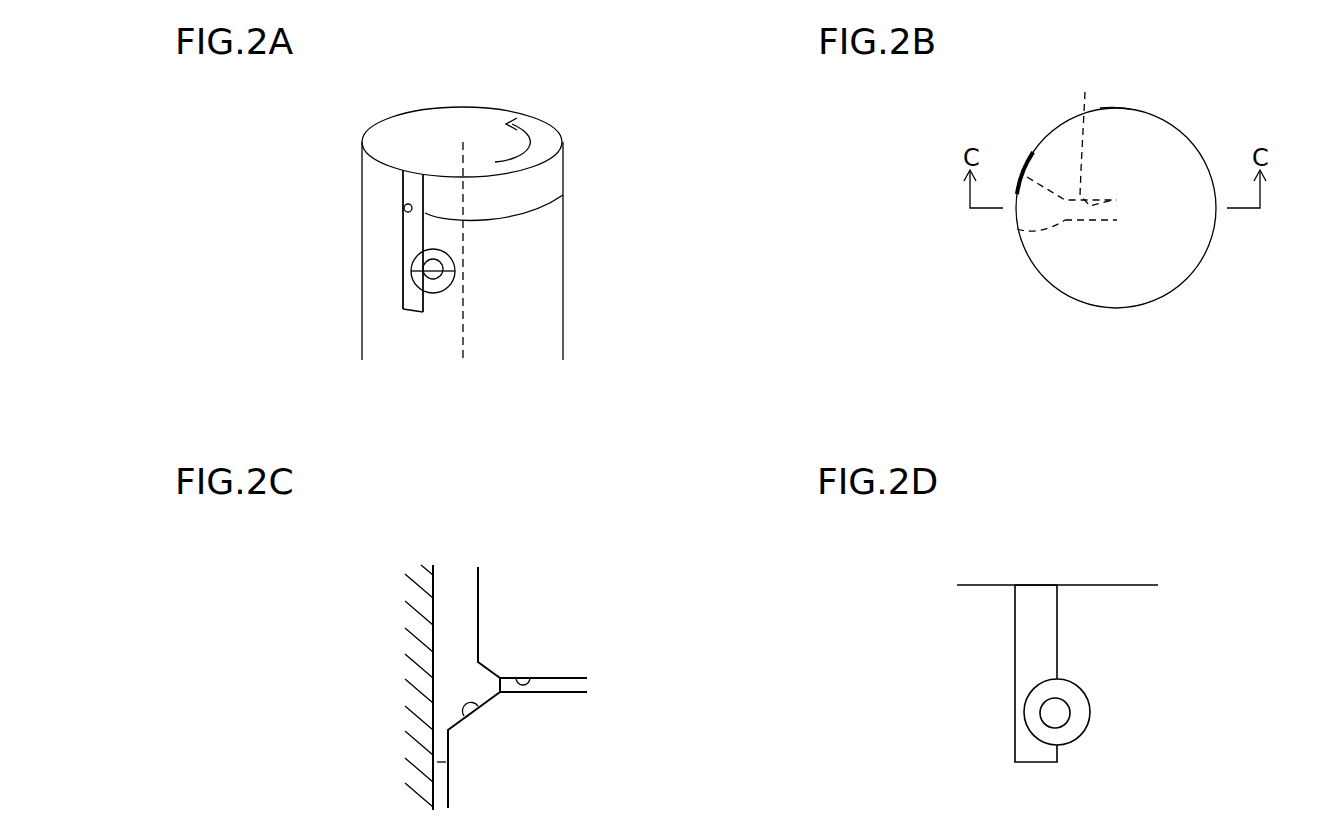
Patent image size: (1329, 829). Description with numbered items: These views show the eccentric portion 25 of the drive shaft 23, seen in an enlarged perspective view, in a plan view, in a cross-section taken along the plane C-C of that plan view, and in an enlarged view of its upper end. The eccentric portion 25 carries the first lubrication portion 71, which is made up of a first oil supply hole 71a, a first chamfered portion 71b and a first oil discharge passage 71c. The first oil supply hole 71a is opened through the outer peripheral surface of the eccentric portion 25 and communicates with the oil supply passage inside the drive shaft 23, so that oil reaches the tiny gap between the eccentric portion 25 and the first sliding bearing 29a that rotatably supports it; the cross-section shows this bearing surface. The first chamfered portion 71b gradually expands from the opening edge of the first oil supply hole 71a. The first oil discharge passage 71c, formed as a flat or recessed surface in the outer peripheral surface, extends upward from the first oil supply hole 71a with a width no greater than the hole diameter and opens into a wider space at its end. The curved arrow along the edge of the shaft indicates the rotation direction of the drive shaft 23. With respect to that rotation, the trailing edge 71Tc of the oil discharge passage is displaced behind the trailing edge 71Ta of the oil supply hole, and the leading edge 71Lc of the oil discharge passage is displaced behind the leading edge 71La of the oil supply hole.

In FIG. 2A, the drive shaft 23 is at (582, 163).
In FIG. 2B, the drive shaft 23 is at (1208, 122).
In FIG. 2A, the eccentric portion 25 is at (563, 245).
In FIG. 2B, the eccentric portion 25 is at (1208, 250).
In FIG. 2C, the eccentric portion 25 is at (430, 757).
In FIG. 2C, the first sliding bearing 29a is at (418, 776).
In FIG. 2A, the first lubrication portion 71 is at (458, 254).
In FIG. 2B, the first lubrication portion 71 is at (1062, 236).
In FIG. 2D, the first lubrication portion 71 is at (998, 690).
In FIG. 2A, the first oil supply hole 71a is at (445, 290).
In FIG. 2B, the first oil supply hole 71a is at (1147, 137).
In FIG. 2C, the first oil supply hole 71a is at (533, 677).
In FIG. 2D, the first oil supply hole 71a is at (1063, 716).
In FIG. 2A, the first chamfered portion 71b is at (420, 281).
In FIG. 2B, the first chamfered portion 71b is at (1027, 227).
In FIG. 2C, the first chamfered portion 71b is at (480, 707).
In FIG. 2D, the first chamfered portion 71b is at (1063, 693).
In FIG. 2A, the first oil discharge passage 71c is at (412, 188).
In FIG. 2B, the first oil discharge passage 71c is at (1030, 157).
In FIG. 2C, the first oil discharge passage 71c is at (478, 590).
In FIG. 2D, the first oil discharge passage 71c is at (1035, 603).
In FIG. 2A, the trailing edge of the oil discharge passage 71Tc is at (403, 213).
In FIG. 2A, the trailing edge of the oil supply hole 71Ta is at (415, 257).
In FIG. 2A, the leading edge of the oil discharge passage 71Lc is at (563, 195).
In FIG. 2A, the leading edge of the oil supply hole 71La is at (420, 254).